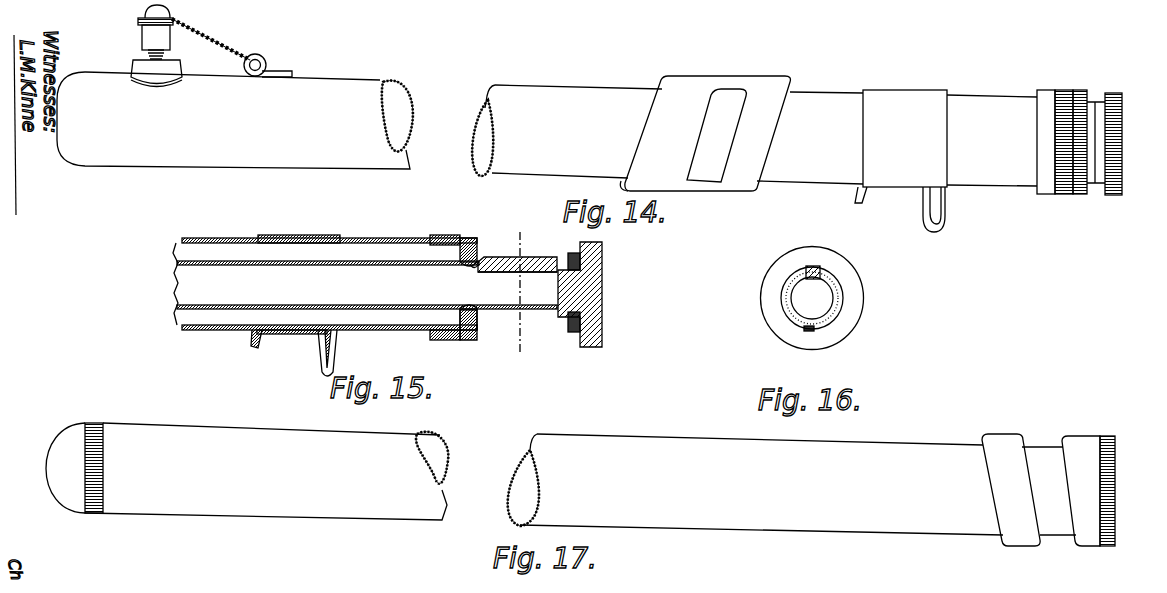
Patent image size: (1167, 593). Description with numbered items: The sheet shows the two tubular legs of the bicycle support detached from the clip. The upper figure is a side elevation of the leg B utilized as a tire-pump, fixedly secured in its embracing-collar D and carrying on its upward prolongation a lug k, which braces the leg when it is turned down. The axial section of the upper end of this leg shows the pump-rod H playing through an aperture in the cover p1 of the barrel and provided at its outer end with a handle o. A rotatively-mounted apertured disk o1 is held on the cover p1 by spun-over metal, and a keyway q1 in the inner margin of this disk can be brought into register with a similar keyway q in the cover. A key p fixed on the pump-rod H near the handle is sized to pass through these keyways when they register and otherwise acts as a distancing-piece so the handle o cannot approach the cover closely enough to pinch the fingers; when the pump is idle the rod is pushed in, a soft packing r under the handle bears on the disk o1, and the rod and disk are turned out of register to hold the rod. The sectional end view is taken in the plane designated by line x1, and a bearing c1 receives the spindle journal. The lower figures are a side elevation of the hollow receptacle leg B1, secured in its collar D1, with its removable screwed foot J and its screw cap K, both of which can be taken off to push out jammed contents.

In FIG. 14, the tubular leg B is at (763, 144).
In FIG. 15, the tubular leg B is at (325, 279).
In FIG. 14, the embracing-collar D is at (705, 133).
In FIG. 14, the lug k is at (948, 220).
In FIG. 15, the lug k is at (320, 355).
In FIG. 14, the cover p1 is at (1062, 92).
In FIG. 15, the cover p1 is at (472, 338).
In FIG. 14, the apertured disk o1 is at (1084, 92).
In FIG. 16, the apertured disk o1 is at (823, 303).
In FIG. 14, the handle o is at (1122, 150).
In FIG. 15, the handle o is at (603, 292).
In FIG. 14, the soft packing r is at (1090, 186).
In FIG. 15, the soft packing r is at (568, 338).
In FIG. 15, the pump-rod H is at (367, 285).
In FIG. 16, the pump-rod H is at (790, 297).
In FIG. 15, the section line x1 is at (518, 295).
In FIG. 15, the key p is at (536, 263).
In FIG. 16, the key p is at (818, 277).
In FIG. 15, the keyway q is at (465, 270).
In FIG. 15, the keyway q1 is at (479, 272).
In FIG. 16, the keyway q1 is at (812, 331).
In FIG. 15, the bearing c1 is at (479, 334).
In FIG. 17, the removable foot J is at (247, 471).
In FIG. 17, the tubular leg B1 is at (792, 484).
In FIG. 17, the embracing-collar D1 is at (1000, 512).
In FIG. 17, the screw cap K is at (1118, 488).